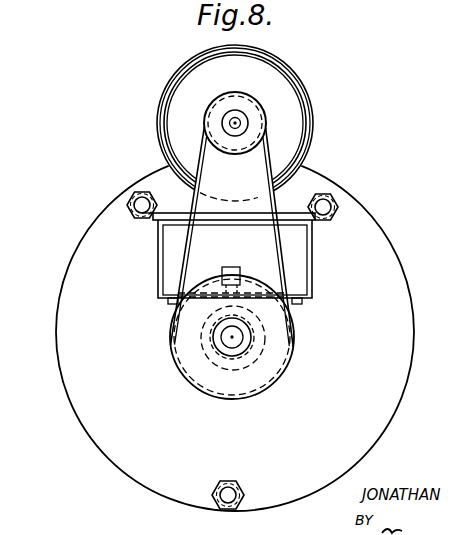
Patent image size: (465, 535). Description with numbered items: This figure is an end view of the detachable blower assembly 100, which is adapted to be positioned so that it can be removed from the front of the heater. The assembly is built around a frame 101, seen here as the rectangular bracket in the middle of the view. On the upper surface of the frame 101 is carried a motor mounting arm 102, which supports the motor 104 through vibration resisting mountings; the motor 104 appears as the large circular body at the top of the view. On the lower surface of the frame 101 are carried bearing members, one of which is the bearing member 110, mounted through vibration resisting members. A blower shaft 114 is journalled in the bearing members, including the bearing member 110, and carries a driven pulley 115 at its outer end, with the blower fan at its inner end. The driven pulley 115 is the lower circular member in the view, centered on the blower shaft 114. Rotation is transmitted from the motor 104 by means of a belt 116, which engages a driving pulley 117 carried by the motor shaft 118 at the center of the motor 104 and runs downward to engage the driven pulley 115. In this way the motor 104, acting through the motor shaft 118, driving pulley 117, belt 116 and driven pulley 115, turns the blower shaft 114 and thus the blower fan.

The detachable blower assembly 100 is at (411, 297).
The frame 101 is at (311, 269).
The motor mounting arm 102 is at (275, 217).
The motor 104 is at (287, 73).
The bearing member 110 is at (288, 347).
The blower shaft 114 is at (238, 340).
The driven pulley 115 is at (229, 390).
The belt 116 is at (187, 247).
The driving pulley 117 is at (236, 101).
The motor shaft 118 is at (247, 122).